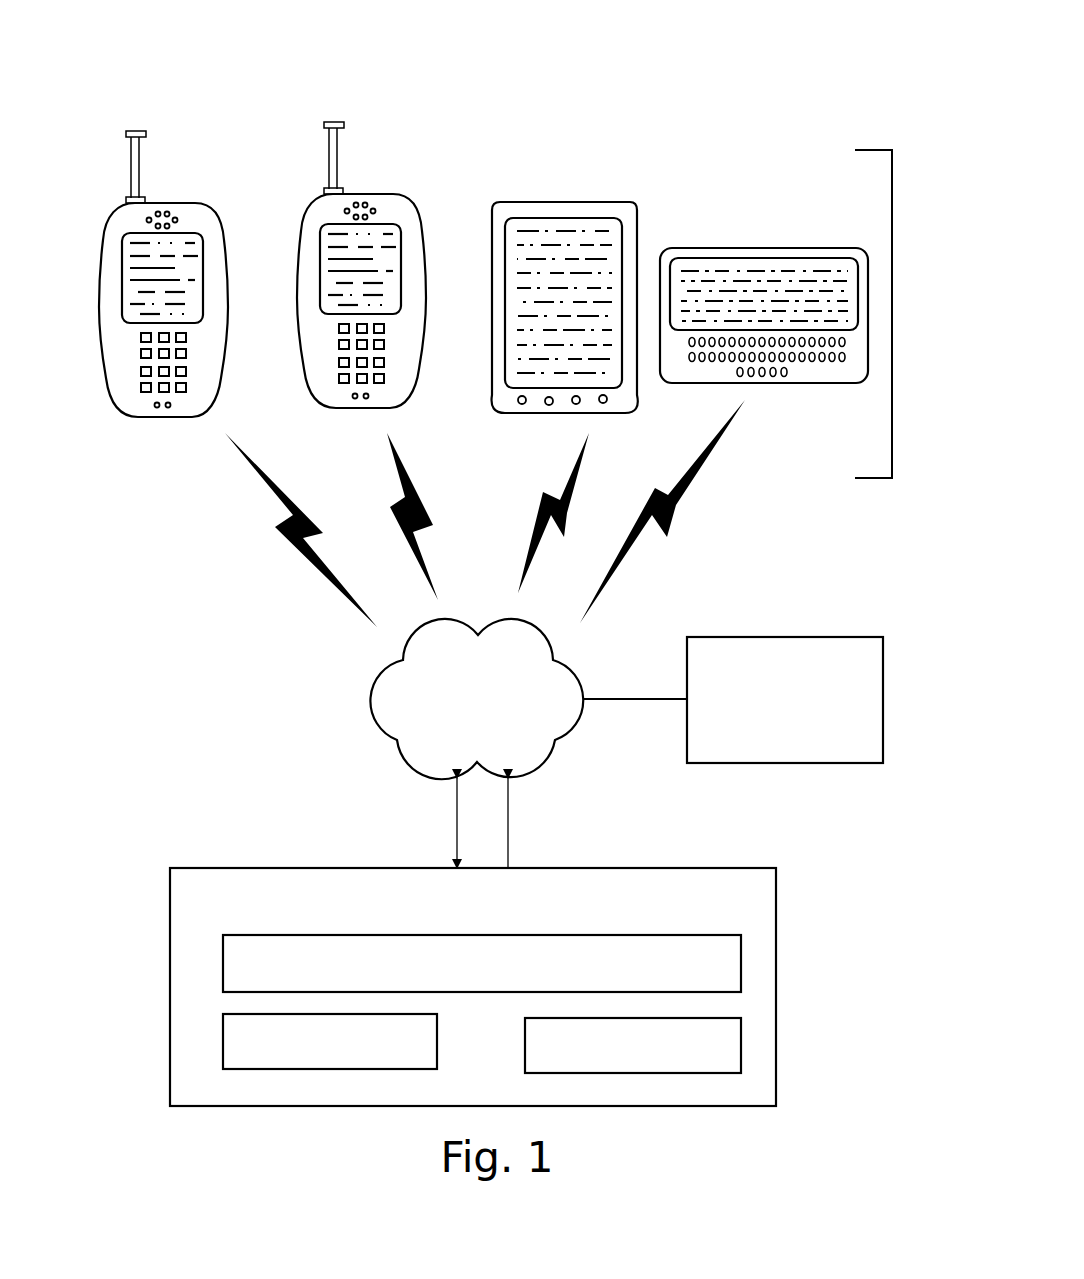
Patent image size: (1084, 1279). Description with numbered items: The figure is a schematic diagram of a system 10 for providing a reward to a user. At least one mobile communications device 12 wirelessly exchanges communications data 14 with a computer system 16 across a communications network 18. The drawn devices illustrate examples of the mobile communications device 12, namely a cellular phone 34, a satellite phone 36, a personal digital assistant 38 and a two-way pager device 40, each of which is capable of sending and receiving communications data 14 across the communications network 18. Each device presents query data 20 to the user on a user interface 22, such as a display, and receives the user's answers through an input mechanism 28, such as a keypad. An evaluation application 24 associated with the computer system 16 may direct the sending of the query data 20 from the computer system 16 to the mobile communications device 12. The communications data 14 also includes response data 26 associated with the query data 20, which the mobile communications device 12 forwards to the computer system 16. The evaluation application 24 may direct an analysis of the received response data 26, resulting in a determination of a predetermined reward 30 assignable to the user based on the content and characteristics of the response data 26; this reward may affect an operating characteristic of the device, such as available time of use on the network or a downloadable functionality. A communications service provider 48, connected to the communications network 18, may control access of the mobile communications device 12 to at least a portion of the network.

The system 10 is at (712, 90).
The mobile communications device 12 is at (892, 312).
The communications data 14 is at (283, 558).
The computer system 16 is at (473, 987).
The communications network 18 is at (528, 699).
The query data 20 is at (330, 1041).
The user interface 22 is at (178, 267).
The evaluation application 24 is at (482, 963).
The response data 26 is at (633, 1045).
The input mechanism 28 is at (190, 366).
The predetermined reward 30 is at (510, 807).
The cellular phone 34 is at (197, 201).
The satellite phone 36 is at (396, 192).
The personal digital assistant 38 is at (605, 200).
The two-way pager device 40 is at (724, 248).
The communications service provider 48 is at (785, 700).